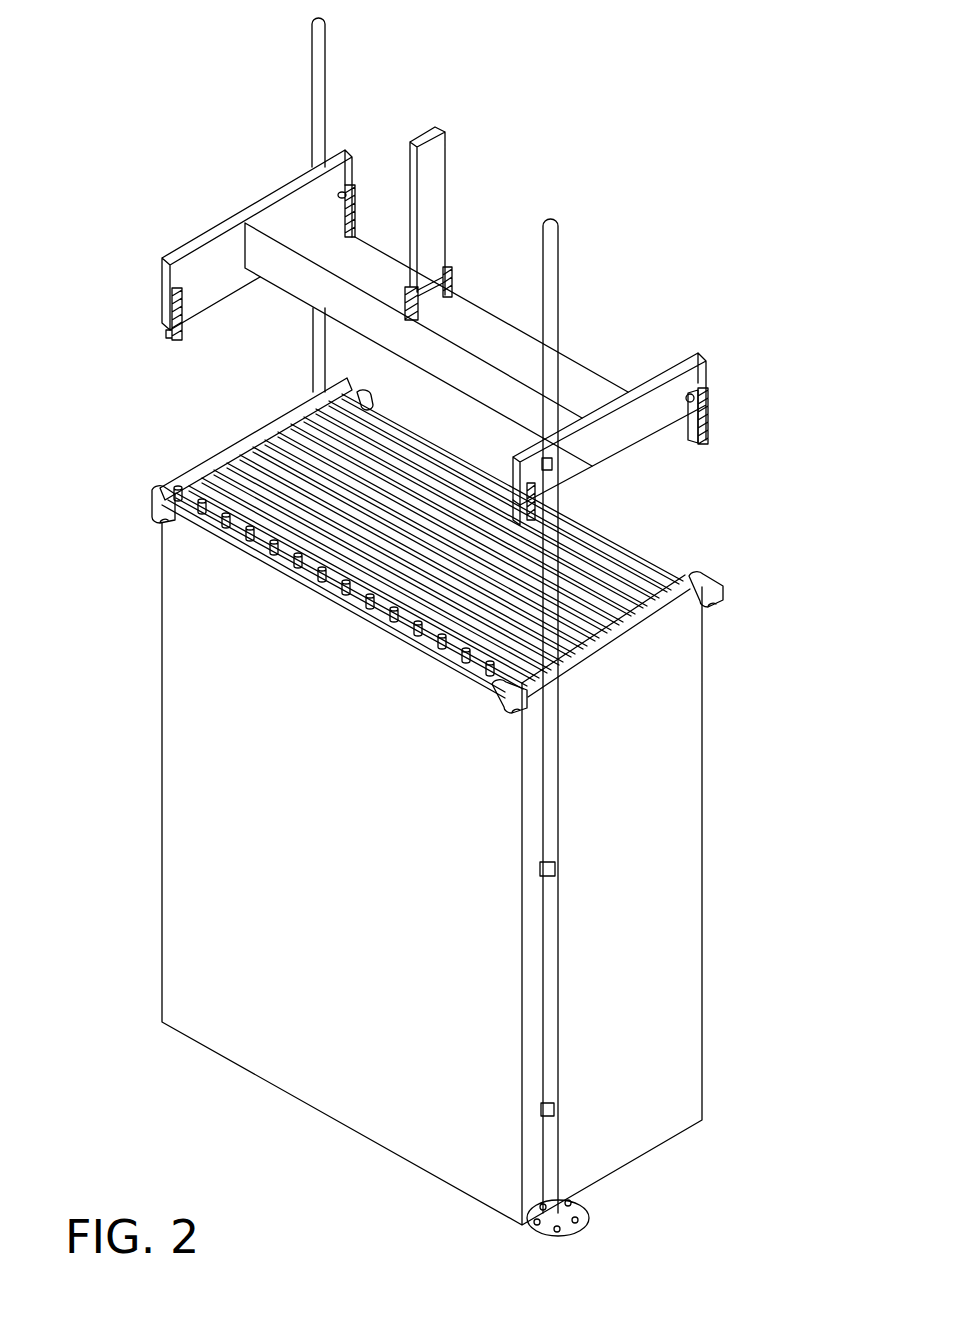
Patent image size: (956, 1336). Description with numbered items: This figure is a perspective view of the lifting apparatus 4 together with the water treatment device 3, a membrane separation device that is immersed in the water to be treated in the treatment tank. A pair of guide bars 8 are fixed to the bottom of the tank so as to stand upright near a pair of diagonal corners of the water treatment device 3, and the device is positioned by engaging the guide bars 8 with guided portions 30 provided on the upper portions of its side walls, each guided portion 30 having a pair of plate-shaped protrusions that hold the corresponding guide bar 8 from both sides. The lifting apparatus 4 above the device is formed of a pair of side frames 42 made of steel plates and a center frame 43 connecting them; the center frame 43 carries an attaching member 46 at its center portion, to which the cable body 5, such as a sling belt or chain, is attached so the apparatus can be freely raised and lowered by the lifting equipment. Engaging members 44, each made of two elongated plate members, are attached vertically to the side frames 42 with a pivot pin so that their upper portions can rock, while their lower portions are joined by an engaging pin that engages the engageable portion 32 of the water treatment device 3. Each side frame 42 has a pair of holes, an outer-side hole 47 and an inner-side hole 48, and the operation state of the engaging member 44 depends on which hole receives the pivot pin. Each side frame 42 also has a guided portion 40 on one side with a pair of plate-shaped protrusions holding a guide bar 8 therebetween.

The water treatment device 3 is at (703, 950).
The lifting apparatus 4 is at (248, 194).
The cable body 5 is at (447, 175).
The guide bar 8 is at (326, 62).
The guided portion 30 is at (558, 868).
The engageable portion 32 is at (160, 492).
The guided portion 40 is at (560, 459).
The side frame 42 is at (193, 240).
The center frame 43 is at (597, 367).
The engaging member 44 is at (166, 326).
The attaching member 46 is at (459, 285).
The outer-side hole 47 is at (708, 392).
The inner-side hole 48 is at (690, 403).